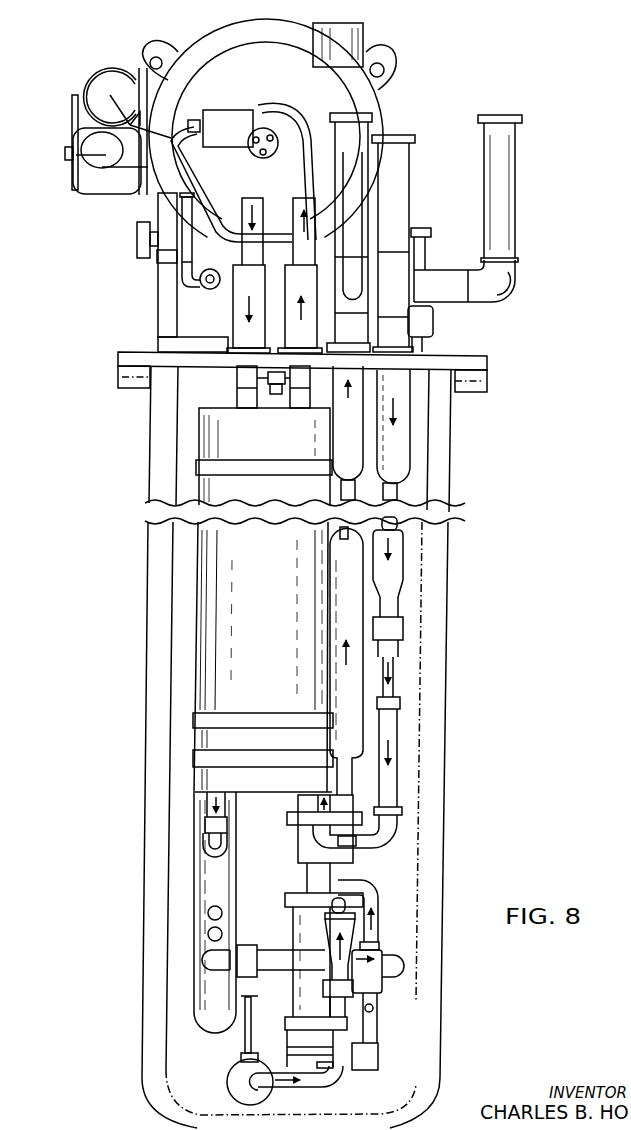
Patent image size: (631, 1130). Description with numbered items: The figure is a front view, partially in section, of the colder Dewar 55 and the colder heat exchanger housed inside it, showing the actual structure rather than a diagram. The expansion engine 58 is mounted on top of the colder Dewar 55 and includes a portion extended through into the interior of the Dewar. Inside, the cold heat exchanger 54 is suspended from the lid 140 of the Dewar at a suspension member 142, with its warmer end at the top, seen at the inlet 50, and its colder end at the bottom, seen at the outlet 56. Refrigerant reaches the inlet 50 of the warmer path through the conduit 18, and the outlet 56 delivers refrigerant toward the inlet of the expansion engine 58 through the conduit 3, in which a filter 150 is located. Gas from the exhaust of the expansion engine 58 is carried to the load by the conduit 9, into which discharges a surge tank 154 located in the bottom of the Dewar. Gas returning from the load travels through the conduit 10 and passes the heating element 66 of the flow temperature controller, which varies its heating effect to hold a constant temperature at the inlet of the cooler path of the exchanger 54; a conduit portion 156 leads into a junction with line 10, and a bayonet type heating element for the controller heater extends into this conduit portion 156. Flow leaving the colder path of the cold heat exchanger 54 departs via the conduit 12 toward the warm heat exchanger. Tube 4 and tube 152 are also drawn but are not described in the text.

The expansion engine 58 is at (203, 47).
The conduit 9 is at (334, 138).
The conduit 10 is at (517, 157).
The conduit 12 is at (297, 207).
The conduit portion 156 is at (407, 215).
The conduit 18 is at (236, 302).
The lid 140 is at (147, 353).
The suspension member 142 is at (264, 386).
The inlet 50 is at (219, 407).
The heating element 66 is at (410, 444).
The tube 4 is at (410, 466).
The cold heat exchanger 54 is at (196, 618).
The colder Dewar 55 is at (447, 697).
The outlet 56 is at (271, 795).
The conduit 3 is at (205, 830).
The tube 152 is at (237, 891).
The filter 150 is at (377, 993).
The surge tank 154 is at (233, 1071).